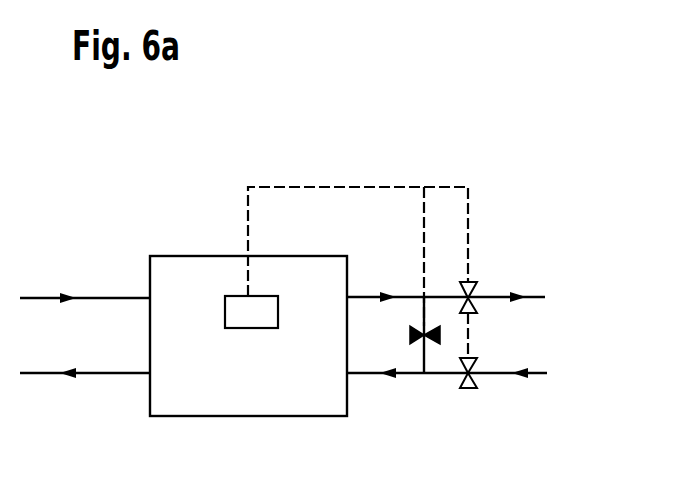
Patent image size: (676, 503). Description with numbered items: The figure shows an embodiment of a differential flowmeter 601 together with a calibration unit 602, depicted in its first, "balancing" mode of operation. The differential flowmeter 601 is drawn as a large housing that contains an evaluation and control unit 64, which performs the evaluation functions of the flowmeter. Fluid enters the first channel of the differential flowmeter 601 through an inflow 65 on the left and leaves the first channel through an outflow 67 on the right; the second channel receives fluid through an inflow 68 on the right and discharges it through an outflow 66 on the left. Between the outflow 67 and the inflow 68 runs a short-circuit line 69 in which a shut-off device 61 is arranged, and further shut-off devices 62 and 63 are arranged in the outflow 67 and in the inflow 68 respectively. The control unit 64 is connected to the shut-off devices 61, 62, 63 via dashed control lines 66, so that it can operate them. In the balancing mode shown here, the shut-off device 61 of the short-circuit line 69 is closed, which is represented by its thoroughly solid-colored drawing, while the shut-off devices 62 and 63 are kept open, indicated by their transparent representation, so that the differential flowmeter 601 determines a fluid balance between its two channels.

The differential flowmeter 601 is at (197, 256).
The calibration unit 602 is at (520, 288).
The shut-off device 61 is at (440, 333).
The shut-off device 62 is at (478, 290).
The shut-off device 63 is at (477, 378).
The evaluation and control unit 64 is at (247, 328).
The inflow 65 is at (122, 295).
The outflow / control lines 66 is at (123, 375).
The outflow 67 is at (407, 293).
The inflow 68 is at (405, 377).
The short-circuit line 69 is at (427, 353).